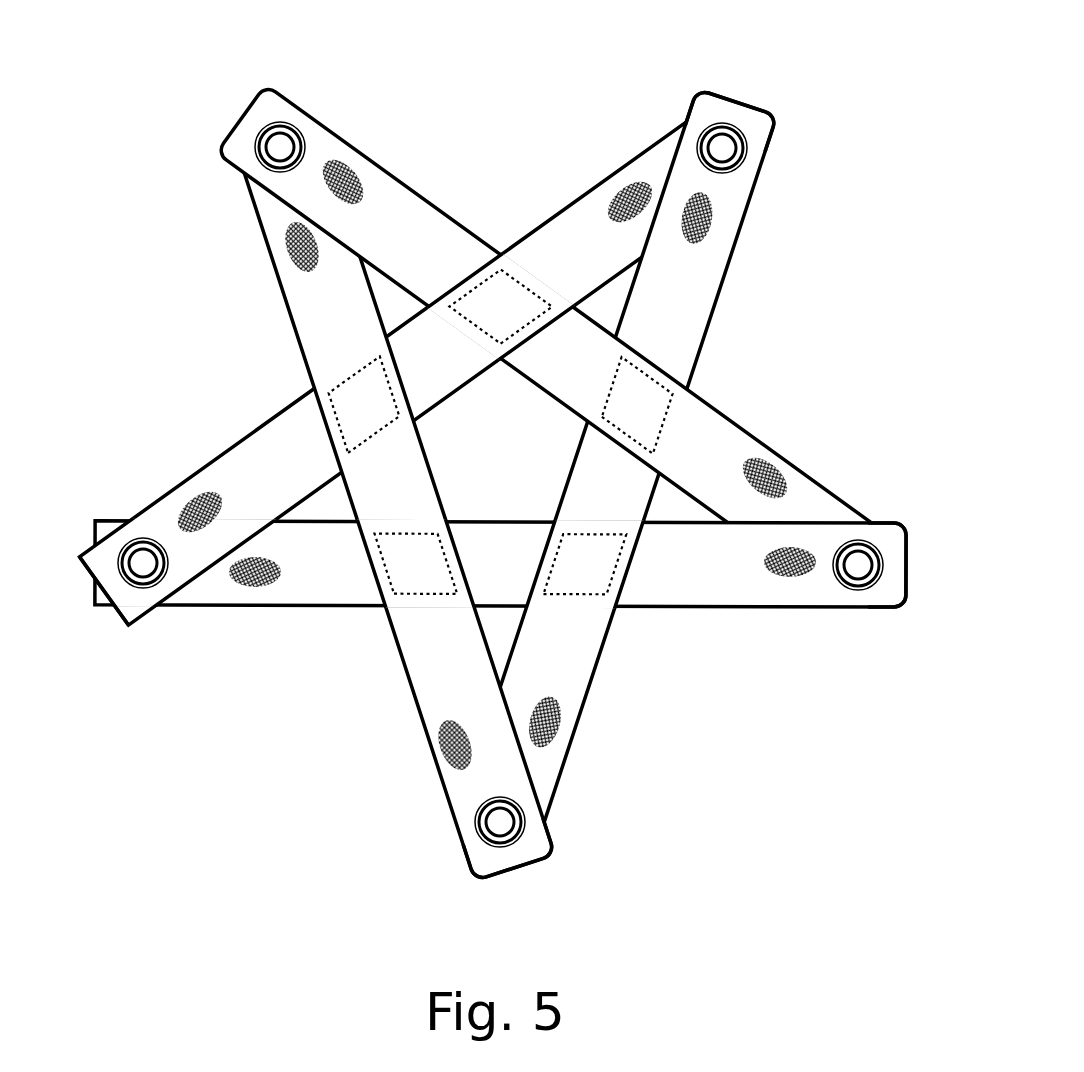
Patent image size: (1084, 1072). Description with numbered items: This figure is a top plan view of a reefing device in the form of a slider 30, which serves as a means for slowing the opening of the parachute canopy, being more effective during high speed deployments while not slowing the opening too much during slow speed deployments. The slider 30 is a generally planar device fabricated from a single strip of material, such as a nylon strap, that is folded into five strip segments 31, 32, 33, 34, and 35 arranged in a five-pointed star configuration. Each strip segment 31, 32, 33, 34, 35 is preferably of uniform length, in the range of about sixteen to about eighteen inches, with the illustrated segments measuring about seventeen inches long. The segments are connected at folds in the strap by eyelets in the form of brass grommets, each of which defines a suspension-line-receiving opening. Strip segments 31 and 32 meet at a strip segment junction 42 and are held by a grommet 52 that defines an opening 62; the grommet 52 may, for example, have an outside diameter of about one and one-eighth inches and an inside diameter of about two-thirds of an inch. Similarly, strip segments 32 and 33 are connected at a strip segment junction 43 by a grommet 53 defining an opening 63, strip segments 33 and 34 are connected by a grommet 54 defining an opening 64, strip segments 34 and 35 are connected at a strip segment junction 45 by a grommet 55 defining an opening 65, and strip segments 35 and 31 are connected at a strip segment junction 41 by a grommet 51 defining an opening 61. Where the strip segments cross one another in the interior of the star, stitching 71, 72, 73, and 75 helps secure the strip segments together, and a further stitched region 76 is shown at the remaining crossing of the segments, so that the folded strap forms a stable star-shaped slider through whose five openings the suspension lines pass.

The slider 30 is at (234, 109).
The strip segment 31 is at (262, 440).
The strip segment 32 is at (698, 290).
The strip segment 33 is at (312, 331).
The strip segment 34 is at (727, 440).
The strip segment 35 is at (697, 600).
The strip segment junction 41 is at (128, 603).
The strip segment junction 42 is at (762, 130).
The strip segment junction 43 is at (536, 849).
The strip segment junction 45 is at (885, 598).
The grommet 51 is at (150, 584).
The grommet 52 is at (743, 148).
The grommet 53 is at (518, 818).
The grommet 54 is at (265, 156).
The grommet 55 is at (853, 586).
The opening 61 is at (143, 563).
The suspension-line-receiving opening 62 is at (722, 148).
The opening 63 is at (500, 822).
The opening 64 is at (280, 147).
The opening 65 is at (858, 565).
The stitching 71 is at (383, 420).
The stitching 72 is at (518, 286).
The stitching 73 is at (618, 428).
The stitching 75 is at (420, 603).
The fastener patch 76 is at (588, 603).